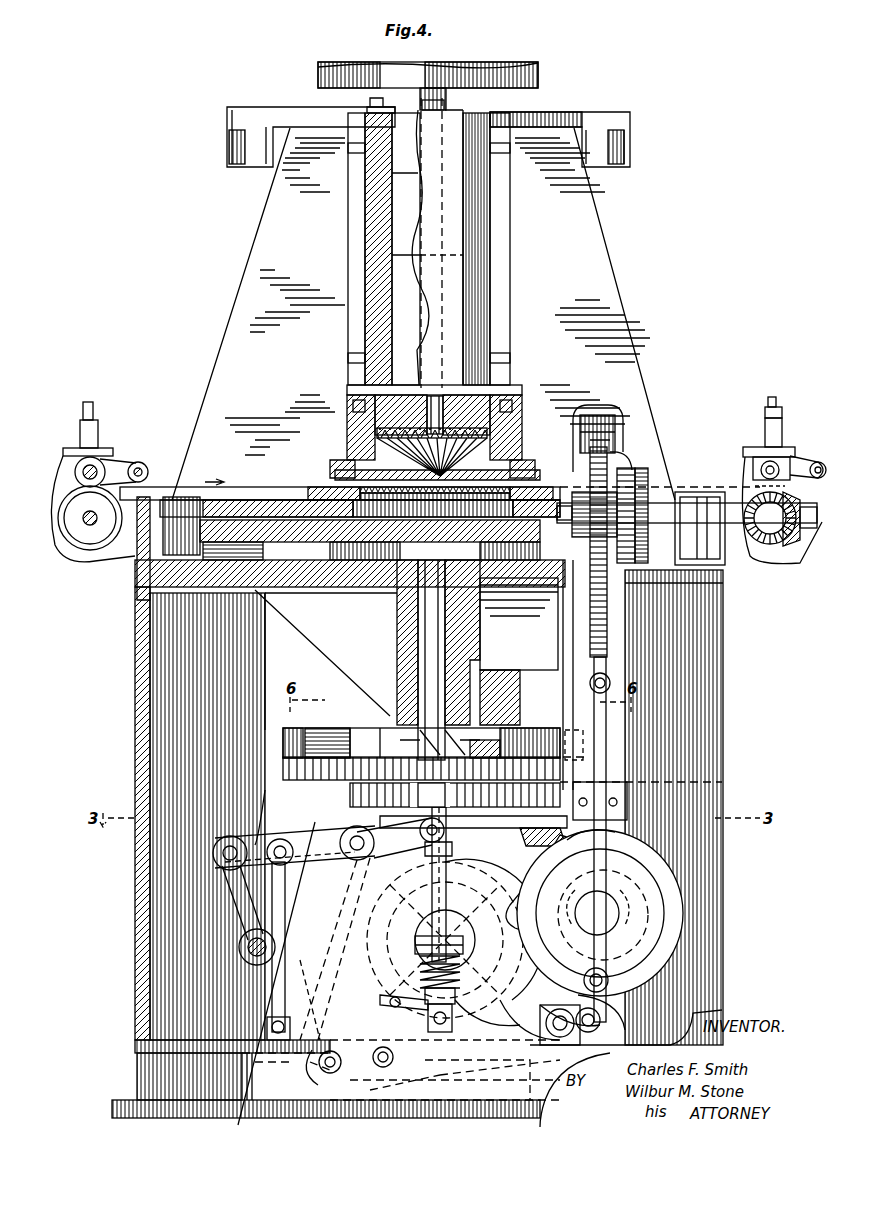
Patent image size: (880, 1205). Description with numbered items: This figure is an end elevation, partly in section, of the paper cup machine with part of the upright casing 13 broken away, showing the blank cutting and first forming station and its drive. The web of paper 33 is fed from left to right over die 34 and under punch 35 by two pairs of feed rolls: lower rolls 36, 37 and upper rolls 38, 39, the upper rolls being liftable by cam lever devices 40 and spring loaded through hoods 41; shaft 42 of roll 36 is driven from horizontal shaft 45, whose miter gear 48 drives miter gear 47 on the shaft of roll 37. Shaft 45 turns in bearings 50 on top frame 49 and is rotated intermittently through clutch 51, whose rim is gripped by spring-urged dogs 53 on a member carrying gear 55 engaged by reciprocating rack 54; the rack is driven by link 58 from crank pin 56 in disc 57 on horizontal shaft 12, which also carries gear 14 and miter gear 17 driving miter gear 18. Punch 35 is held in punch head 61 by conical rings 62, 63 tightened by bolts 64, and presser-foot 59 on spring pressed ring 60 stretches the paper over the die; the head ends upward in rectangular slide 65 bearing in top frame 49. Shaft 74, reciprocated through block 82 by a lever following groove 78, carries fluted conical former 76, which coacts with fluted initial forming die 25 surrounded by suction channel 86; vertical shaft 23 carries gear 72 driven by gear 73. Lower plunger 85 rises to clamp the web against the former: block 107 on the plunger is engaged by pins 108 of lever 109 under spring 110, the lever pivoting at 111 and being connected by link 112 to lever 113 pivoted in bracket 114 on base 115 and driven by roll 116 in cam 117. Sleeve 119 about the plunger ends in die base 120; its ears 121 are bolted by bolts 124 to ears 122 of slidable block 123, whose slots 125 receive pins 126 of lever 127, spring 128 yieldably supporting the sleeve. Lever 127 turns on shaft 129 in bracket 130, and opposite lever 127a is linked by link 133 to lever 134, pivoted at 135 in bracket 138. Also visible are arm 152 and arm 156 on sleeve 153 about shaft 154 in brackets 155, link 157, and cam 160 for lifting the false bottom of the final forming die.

The horizontal shaft 12 is at (641, 926).
The casing 13 is at (719, 809).
The gear 14 is at (418, 193).
The miter gear 17 is at (528, 900).
The miter gear 18 is at (522, 843).
The vertical shaft 23 is at (422, 97).
The initial forming die 25 is at (458, 518).
The web of paper 33 is at (241, 491).
The die 34 is at (521, 486).
The punch 35 is at (347, 480).
The lower feed roll 36 is at (95, 547).
The lower feed roll 37 is at (769, 556).
The upper feed roll 38 is at (96, 461).
The upper feed roll 39 is at (790, 446).
The cam lever device 40 is at (131, 470).
The hood 41 is at (83, 430).
The shaft 42 is at (85, 523).
The horizontal shaft 45 is at (750, 541).
The miter gear 47 is at (781, 546).
The miter gear 48 is at (786, 536).
The top frame 49 is at (636, 378).
The bearing 50 is at (691, 505).
The clutch 51 is at (641, 470).
The dog 53 is at (621, 455).
The reciprocating rack 54 is at (596, 590).
The gear 55 is at (592, 537).
The crank pin 56 is at (622, 1001).
The disc 57 is at (686, 906).
The link 58 is at (601, 798).
The presser-foot 59 is at (350, 460).
The spring pressed ring 60 is at (526, 456).
The punch head 61 is at (521, 405).
The conical faced ring 62 is at (512, 395).
The conical faced ring 63 is at (366, 405).
The bolt 64 is at (370, 393).
The rectangular slide 65 is at (402, 323).
The gear 72 is at (360, 771).
The gear 73 is at (539, 805).
The shaft 74 is at (448, 104).
The fluted conical former 76 is at (435, 464).
The circumferential groove 78 is at (540, 74).
The block 82 is at (408, 153).
The lower plunger 85 is at (441, 648).
The channel 86 is at (358, 568).
The slidable block 107 is at (450, 996).
The pin 108 is at (455, 976).
The lever 109 is at (416, 947).
The spring 110 is at (458, 948).
The pivot 111 is at (249, 953).
The link 112 is at (386, 998).
The lever 113 is at (470, 1005).
The bracket 114 is at (603, 1048).
The base 115 is at (156, 1079).
The roll 116 is at (470, 1001).
The cam 117 is at (488, 868).
The sleeve 119 is at (486, 702).
The die base 120 is at (471, 600).
The ear 121 is at (394, 735).
The ear 122 is at (358, 840).
The slidable block 123 is at (450, 818).
The bolt 124 is at (511, 746).
The transverse slot 125 is at (446, 834).
The pin 126 is at (446, 852).
The lever 127 is at (424, 875).
The lever 127a is at (295, 834).
The spring 128 is at (471, 746).
The shaft 129 is at (345, 894).
The bracket 130 is at (236, 1112).
The link 133 is at (272, 895).
The lever 134 is at (290, 1010).
The pivot 135 is at (599, 1029).
The bracket 138 is at (690, 859).
The arm 152 is at (286, 936).
The sleeve 153 is at (500, 1002).
The shaft 154 is at (224, 853).
The bracket 155 is at (215, 1008).
The arm 156 is at (253, 838).
The link 157 is at (311, 1061).
The cam 160 is at (358, 1080).